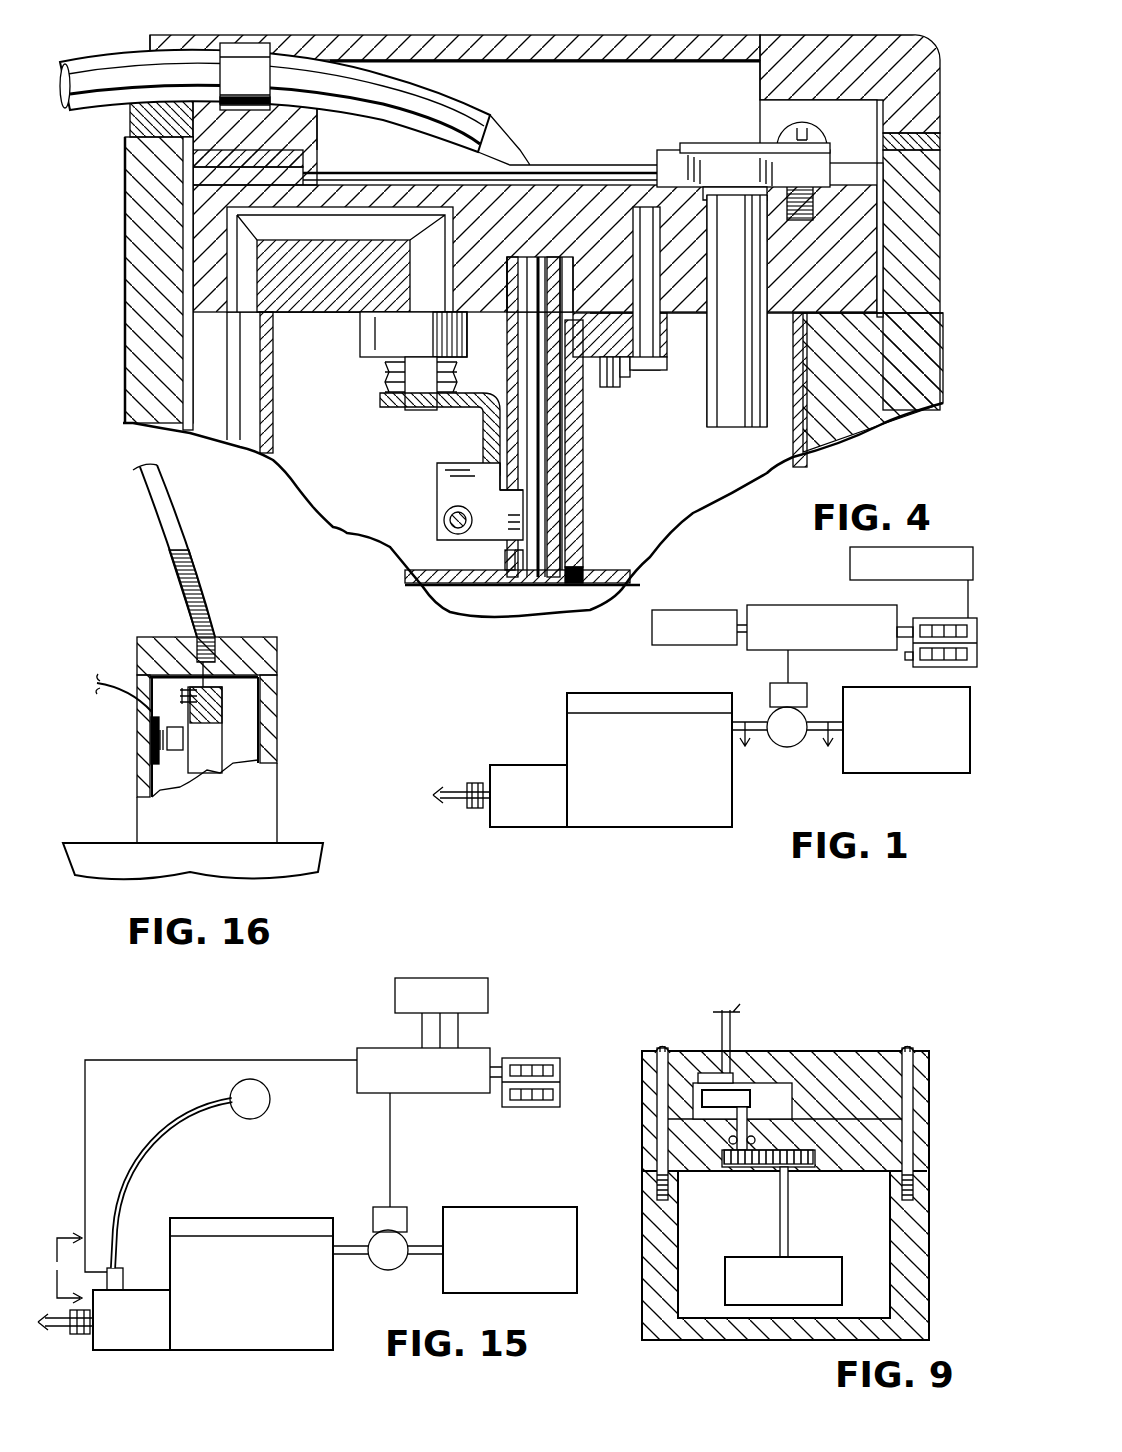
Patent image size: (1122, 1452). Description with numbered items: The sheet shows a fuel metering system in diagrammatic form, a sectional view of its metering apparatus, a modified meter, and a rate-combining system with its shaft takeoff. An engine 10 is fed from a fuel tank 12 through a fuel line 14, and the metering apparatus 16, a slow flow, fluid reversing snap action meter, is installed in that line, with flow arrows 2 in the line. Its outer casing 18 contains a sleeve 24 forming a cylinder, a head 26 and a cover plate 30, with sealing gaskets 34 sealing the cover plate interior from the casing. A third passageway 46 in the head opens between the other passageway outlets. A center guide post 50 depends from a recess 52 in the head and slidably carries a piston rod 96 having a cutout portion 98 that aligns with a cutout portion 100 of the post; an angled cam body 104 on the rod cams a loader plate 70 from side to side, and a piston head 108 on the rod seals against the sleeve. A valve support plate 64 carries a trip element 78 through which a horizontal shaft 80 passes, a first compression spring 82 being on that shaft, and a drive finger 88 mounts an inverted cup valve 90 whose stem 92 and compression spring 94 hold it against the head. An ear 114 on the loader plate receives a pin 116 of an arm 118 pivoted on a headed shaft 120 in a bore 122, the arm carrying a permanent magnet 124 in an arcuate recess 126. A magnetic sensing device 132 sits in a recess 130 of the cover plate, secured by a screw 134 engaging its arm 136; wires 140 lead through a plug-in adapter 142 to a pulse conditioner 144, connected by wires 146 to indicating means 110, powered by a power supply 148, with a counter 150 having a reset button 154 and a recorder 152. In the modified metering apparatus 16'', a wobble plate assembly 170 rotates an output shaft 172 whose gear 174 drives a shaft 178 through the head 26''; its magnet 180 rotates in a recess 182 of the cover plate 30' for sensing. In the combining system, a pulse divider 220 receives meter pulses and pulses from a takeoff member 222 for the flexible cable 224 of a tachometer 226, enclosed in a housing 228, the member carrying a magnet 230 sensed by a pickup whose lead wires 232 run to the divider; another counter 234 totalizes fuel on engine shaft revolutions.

In FIG. 1, the fuel flow direction arrows 2 is at (786, 742).
In FIG. 16, the engine 10 is at (103, 867).
In FIG. 1, the engine 10 is at (633, 703).
In FIG. 15, the engine 10 is at (243, 1224).
In FIG. 1, the fuel tank 12 is at (910, 755).
In FIG. 15, the fuel tank 12 is at (497, 1217).
In FIG. 1, the fuel line 14 is at (833, 722).
In FIG. 4, the metering apparatus 16 is at (533, 510).
In FIG. 1, the metering apparatus 16 is at (784, 745).
In FIG. 15, the metering apparatus 16 is at (247, 1269).
In FIG. 9, the modified metering apparatus 16'' is at (785, 1179).
In FIG. 4, the outer casing 18 is at (867, 407).
In FIG. 4, the sleeve 24 is at (797, 453).
In FIG. 4, the head 26 is at (585, 255).
In FIG. 9, the head 26'' is at (809, 1218).
In FIG. 4, the cover plate 30 is at (547, 70).
In FIG. 9, the cover plate 30' is at (813, 1123).
In FIG. 4, the sealing gaskets 34 is at (946, 163).
In FIG. 4, the third passageway 46 is at (362, 235).
In FIG. 4, the center guide post 50 is at (523, 565).
In FIG. 4, the recess 52 is at (507, 247).
In FIG. 4, the valve support plate 64 is at (490, 412).
In FIG. 4, the loader plate 70 is at (576, 583).
In FIG. 4, the trip element 78 is at (483, 530).
In FIG. 4, the horizontal shaft 80 is at (447, 530).
In FIG. 4, the first compression spring 82 is at (444, 522).
In FIG. 4, the drive finger 88 is at (383, 405).
In FIG. 4, the cup valve 90 is at (357, 357).
In FIG. 4, the stem 92 is at (437, 420).
In FIG. 4, the compression spring 94 is at (400, 380).
In FIG. 4, the piston rod 96 is at (555, 457).
In FIG. 4, the cutout portion 98 is at (508, 562).
In FIG. 4, the cutout portion 100 is at (543, 568).
In FIG. 4, the cam body 104 is at (570, 503).
In FIG. 4, the piston head 108 is at (637, 577).
In FIG. 1, the indicating means 110 is at (942, 618).
In FIG. 15, the indicating means 110 is at (525, 1058).
In FIG. 4, the ear 114 is at (604, 386).
In FIG. 4, the pin 116 is at (622, 380).
In FIG. 4, the arm 118 is at (690, 347).
In FIG. 4, the headed shaft 120 is at (645, 370).
In FIG. 4, the bore 122 is at (630, 210).
In FIG. 4, the permanent magnet 124 is at (747, 427).
In FIG. 4, the arcuate recess 126 is at (703, 200).
In FIG. 4, the recess 130 is at (663, 87).
In FIG. 4, the magnetic sensing device 132 is at (713, 167).
In FIG. 16, the magnetic sensing device 132 is at (150, 745).
In FIG. 1, the magnetic sensing device 132 is at (770, 695).
In FIG. 15, the magnetic sensing device 132 is at (407, 1212).
In FIG. 9, the magnetic sensing device 132 is at (715, 1072).
In FIG. 4, the screw 134 is at (817, 142).
In FIG. 4, the arm 136 is at (740, 147).
In FIG. 4, the wires 140 is at (516, 130).
In FIG. 1, the wires 140 is at (788, 665).
In FIG. 15, the wires 140 is at (389, 1170).
In FIG. 4, the plug-in adapter 142 is at (243, 60).
In FIG. 1, the pulse conditioner 144 is at (830, 608).
In FIG. 1, the wires 146 is at (907, 626).
In FIG. 1, the power supply 148 is at (687, 645).
In FIG. 15, the power supply 148 is at (458, 978).
In FIG. 1, the counter 150 is at (920, 667).
In FIG. 1, the recorder 152 is at (850, 557).
In FIG. 1, the reset button 154 is at (903, 655).
In FIG. 9, the wobble plate assembly 170 is at (758, 1295).
In FIG. 9, the output shaft 172 is at (780, 1229).
In FIG. 9, the gear 174 is at (807, 1167).
In FIG. 9, the shaft 178 is at (735, 1130).
In FIG. 9, the magnet 180 is at (748, 1093).
In FIG. 9, the recess 182 is at (775, 1090).
In FIG. 15, the pulse divider 220 is at (400, 1048).
In FIG. 16, the takeoff member 222 is at (208, 747).
In FIG. 16, the flexible cable 224 is at (177, 530).
In FIG. 15, the flexible cable 224 is at (173, 1137).
In FIG. 15, the tachometer 226 is at (257, 1117).
In FIG. 16, the housing 228 is at (255, 805).
In FIG. 15, the housing 228 is at (120, 1276).
In FIG. 16, the magnet 230 is at (150, 790).
In FIG. 16, the wire 232 is at (115, 697).
In FIG. 15, the wire 232 is at (183, 1060).
In FIG. 15, the counter 234 is at (530, 1108).